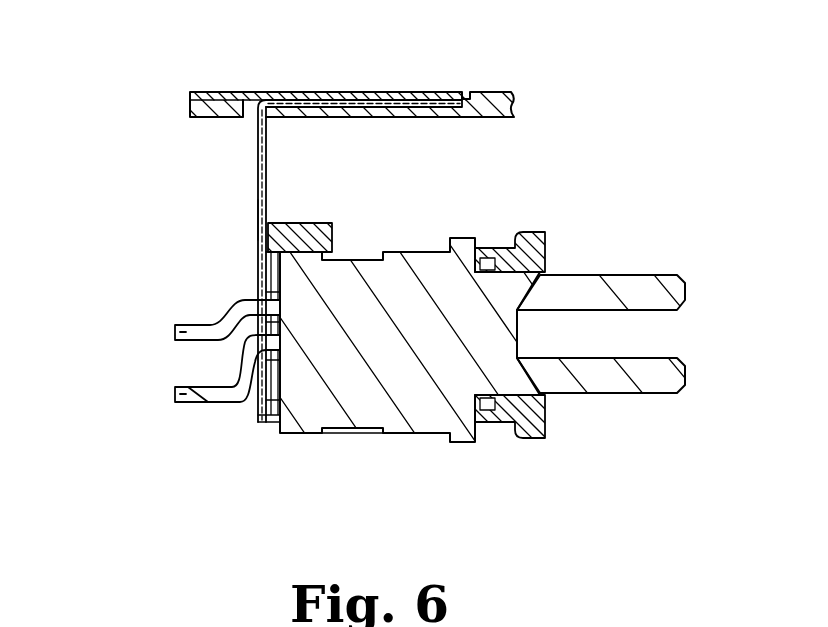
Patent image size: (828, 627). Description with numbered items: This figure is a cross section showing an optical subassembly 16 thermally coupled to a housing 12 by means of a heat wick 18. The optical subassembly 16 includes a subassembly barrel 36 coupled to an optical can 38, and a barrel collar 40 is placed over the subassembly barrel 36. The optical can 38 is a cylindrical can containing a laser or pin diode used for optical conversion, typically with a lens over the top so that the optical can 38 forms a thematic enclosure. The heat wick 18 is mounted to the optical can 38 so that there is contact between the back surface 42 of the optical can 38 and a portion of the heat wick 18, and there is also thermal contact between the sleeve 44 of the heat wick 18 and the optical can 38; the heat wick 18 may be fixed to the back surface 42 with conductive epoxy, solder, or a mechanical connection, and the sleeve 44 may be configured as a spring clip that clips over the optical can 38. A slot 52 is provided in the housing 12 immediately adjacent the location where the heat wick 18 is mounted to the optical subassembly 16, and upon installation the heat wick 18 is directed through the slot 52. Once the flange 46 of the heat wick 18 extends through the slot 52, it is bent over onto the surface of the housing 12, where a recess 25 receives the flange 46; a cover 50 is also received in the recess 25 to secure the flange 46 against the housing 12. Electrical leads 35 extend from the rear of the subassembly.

The housing 12 is at (490, 92).
The optical subassembly 16 is at (335, 444).
The heat wick 18 is at (250, 201).
The recess 25 is at (320, 92).
The contacts 35 is at (175, 393).
The subassembly barrel 36 is at (565, 400).
The optical can 38 is at (404, 250).
The barrel collar 40 is at (531, 232).
The back surface 42 is at (265, 428).
The sleeve 44 is at (300, 222).
The flange 46 is at (258, 176).
The cover 50 is at (376, 92).
The slot 52 is at (250, 122).